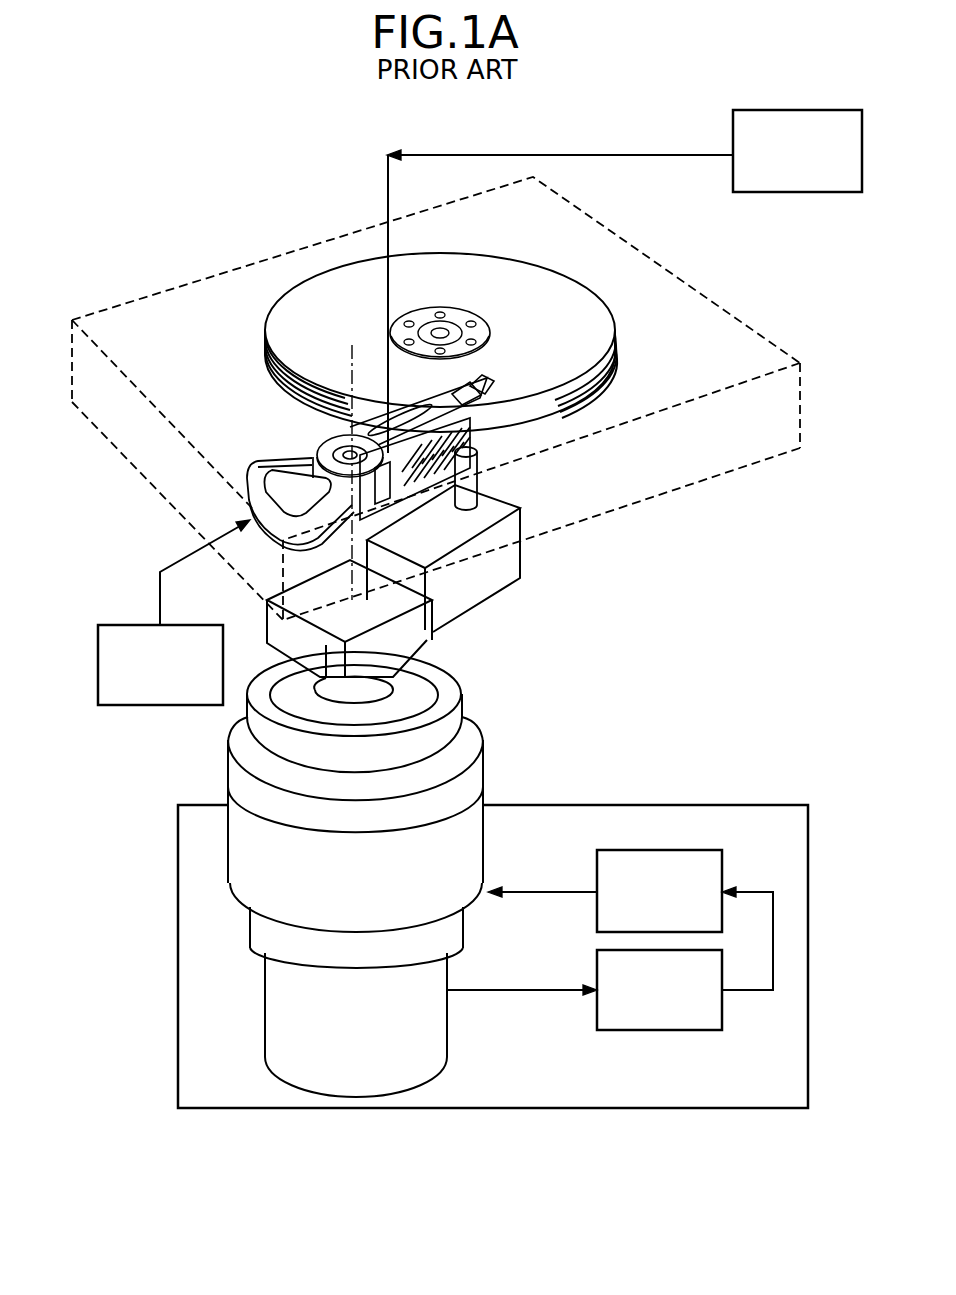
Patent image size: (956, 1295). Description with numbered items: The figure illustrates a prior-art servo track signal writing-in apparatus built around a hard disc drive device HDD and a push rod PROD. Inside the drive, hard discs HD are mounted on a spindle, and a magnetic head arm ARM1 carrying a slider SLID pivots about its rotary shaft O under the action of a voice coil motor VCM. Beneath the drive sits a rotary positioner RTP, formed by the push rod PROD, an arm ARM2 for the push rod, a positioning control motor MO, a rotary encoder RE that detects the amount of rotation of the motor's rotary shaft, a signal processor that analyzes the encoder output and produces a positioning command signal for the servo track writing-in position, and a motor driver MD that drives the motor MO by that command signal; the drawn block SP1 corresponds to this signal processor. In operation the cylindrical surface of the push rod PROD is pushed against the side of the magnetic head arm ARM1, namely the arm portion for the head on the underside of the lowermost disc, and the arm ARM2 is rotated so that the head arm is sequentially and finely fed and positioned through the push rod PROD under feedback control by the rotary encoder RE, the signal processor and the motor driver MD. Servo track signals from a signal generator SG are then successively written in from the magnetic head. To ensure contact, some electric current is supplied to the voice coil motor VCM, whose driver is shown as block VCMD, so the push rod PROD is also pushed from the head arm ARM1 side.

The hard disc drive device HDD is at (236, 267).
The hard discs HD is at (508, 280).
The signal generator SG is at (781, 163).
The rotary shaft of the magnetic head arm O is at (350, 356).
The slider SLID is at (490, 380).
The voice coil motor VCM is at (270, 467).
The magnetic head arm ARM1 is at (478, 440).
The push rod PROD is at (470, 506).
The arm for the push rod ARM2 is at (480, 585).
The voice coil motor driver VCMD is at (125, 677).
The positioning control motor MO is at (542, 880).
The motor driver MD is at (638, 903).
The rotary encoder RE is at (522, 1007).
The spindle controller / servo processor SP1 is at (636, 1003).
The rotary positioner RTP is at (493, 834).